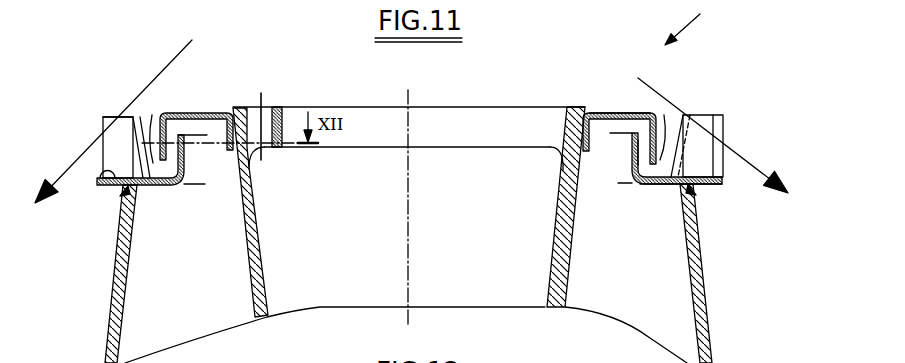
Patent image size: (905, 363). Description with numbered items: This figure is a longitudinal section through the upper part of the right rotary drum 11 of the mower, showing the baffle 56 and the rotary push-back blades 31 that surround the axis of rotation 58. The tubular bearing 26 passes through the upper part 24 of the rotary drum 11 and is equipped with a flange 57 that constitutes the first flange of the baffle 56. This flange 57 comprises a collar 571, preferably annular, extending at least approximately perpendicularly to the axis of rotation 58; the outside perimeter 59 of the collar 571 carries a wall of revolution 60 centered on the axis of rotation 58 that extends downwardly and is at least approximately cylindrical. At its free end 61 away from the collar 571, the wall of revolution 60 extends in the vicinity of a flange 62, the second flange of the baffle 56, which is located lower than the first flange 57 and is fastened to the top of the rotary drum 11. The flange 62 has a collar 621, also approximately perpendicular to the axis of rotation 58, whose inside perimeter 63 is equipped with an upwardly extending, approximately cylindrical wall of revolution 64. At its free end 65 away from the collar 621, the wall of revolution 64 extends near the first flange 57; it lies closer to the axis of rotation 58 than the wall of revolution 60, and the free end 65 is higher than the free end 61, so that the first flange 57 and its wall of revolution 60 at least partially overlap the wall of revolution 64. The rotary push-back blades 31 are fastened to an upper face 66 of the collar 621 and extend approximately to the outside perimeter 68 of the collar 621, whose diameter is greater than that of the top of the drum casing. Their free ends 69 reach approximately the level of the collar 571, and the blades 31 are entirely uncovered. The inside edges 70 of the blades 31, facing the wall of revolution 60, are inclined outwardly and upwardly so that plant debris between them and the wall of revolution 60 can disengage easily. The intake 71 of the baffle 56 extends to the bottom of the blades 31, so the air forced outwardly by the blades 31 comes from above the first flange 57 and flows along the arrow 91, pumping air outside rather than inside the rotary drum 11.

The rotary drum 11 is at (108, 338).
The upper part 24 is at (691, 22).
The tubular bearing 26 is at (550, 283).
The rotary push-back blades 31 is at (117, 130).
The baffle 56 is at (145, 132).
The flange 57 is at (225, 102).
The axis of rotation 58 is at (408, 251).
The outside perimeter 59 is at (645, 113).
The wall of revolution 60 is at (664, 115).
The free end 61 is at (643, 162).
The flange 62 is at (163, 194).
The inside perimeter 63 is at (639, 185).
The wall of revolution 64 is at (636, 149).
The free end 65 is at (181, 134).
The upper face 66 is at (103, 175).
The outside perimeter 68 is at (706, 183).
The free ends 69 is at (117, 117).
The inside edges 70 is at (675, 112).
The intake 71 is at (152, 115).
The arrow 91 is at (80, 183).
The collar 571 is at (600, 112).
The collar 621 is at (697, 186).